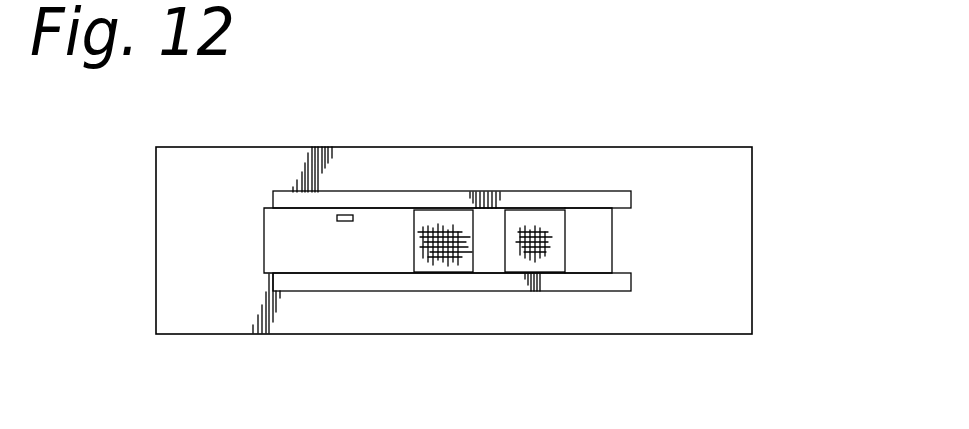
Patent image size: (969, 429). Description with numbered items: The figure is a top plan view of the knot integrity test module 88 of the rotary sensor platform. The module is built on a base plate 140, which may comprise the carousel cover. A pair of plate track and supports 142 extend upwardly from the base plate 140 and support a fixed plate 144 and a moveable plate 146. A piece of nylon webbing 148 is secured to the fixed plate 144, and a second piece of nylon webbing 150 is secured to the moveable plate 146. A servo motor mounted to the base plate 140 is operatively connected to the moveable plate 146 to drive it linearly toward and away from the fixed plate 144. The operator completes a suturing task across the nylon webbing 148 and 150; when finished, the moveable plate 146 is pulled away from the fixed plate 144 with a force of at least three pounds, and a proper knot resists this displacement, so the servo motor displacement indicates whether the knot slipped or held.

The knot integrity test module 88 is at (207, 140).
The base plate 140 is at (740, 178).
The plate track and supports 142 is at (352, 198).
The fixed plate 144 is at (599, 222).
The moveable plate 146 is at (272, 220).
The nylon webbing 148 is at (440, 218).
The second nylon webbing 150 is at (540, 218).